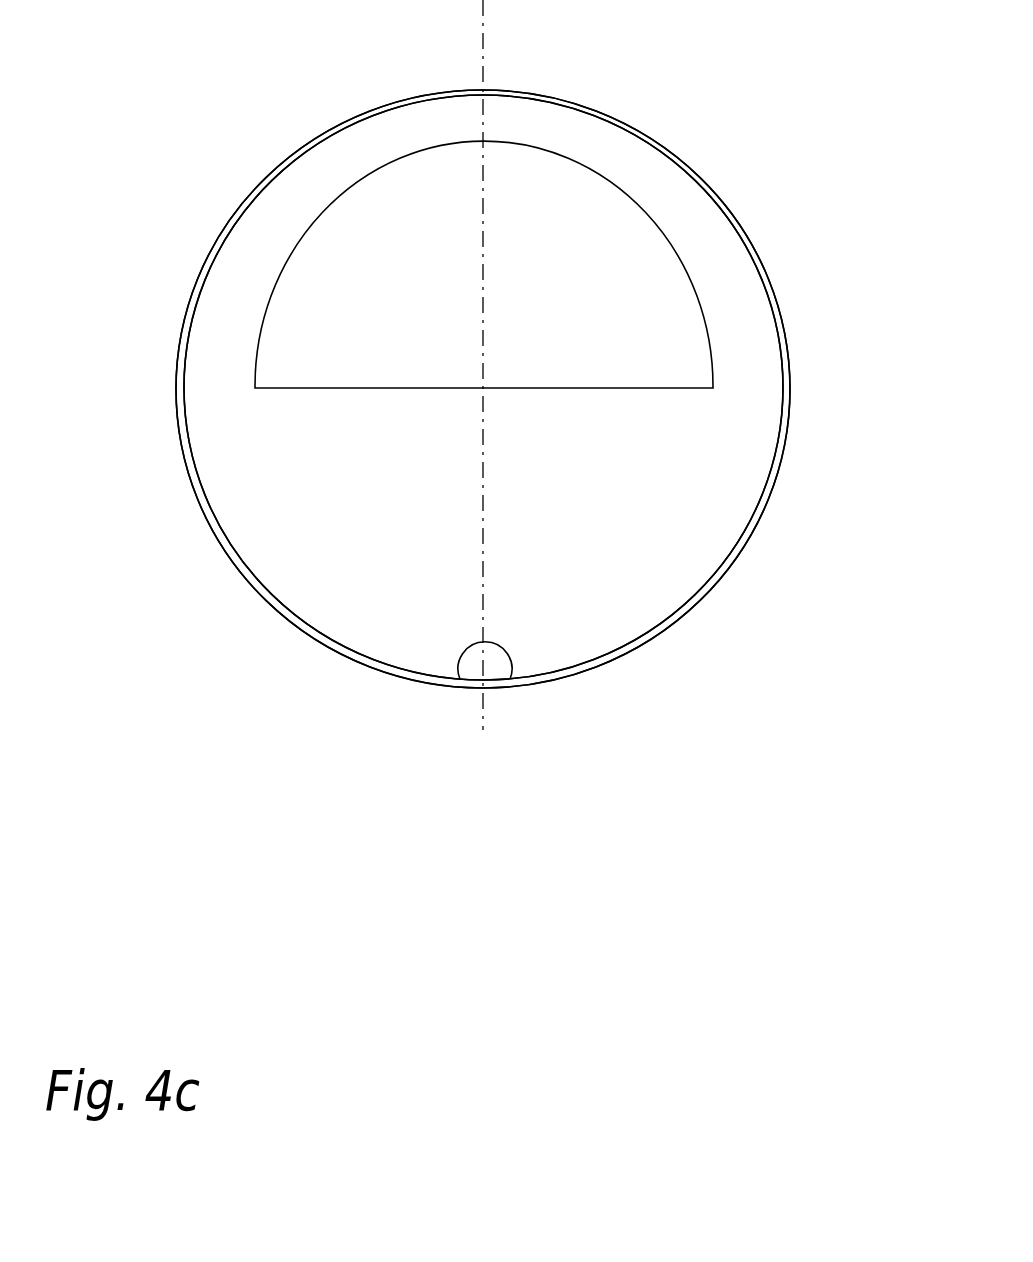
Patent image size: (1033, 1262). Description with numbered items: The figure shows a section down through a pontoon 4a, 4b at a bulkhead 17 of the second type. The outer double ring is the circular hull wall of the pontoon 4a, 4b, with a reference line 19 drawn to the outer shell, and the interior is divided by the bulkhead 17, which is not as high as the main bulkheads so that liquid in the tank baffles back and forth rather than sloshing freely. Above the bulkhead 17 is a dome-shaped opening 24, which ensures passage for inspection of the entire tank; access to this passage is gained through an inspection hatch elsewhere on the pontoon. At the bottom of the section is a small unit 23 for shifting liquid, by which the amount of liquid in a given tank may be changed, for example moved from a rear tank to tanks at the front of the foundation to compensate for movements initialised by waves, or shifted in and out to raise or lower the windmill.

The opening 24 is at (415, 270).
The outer ring 19 is at (768, 495).
The bulkhead of the second type 17 is at (363, 551).
The unit for shifting liquid 23 is at (460, 679).
The pontoon 4a is at (686, 644).
The pontoon 4b is at (483, 387).